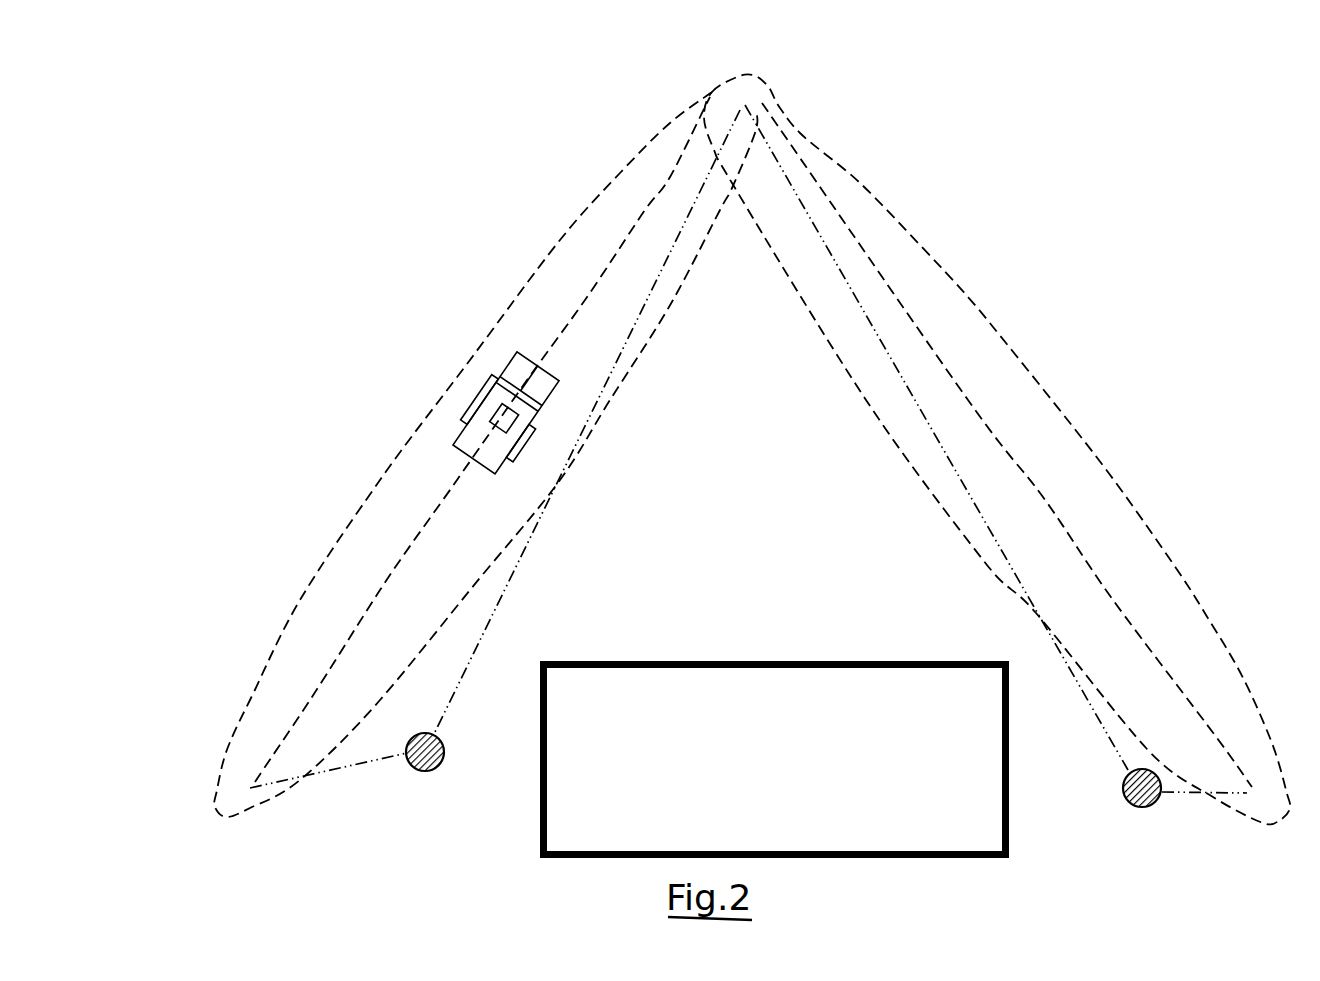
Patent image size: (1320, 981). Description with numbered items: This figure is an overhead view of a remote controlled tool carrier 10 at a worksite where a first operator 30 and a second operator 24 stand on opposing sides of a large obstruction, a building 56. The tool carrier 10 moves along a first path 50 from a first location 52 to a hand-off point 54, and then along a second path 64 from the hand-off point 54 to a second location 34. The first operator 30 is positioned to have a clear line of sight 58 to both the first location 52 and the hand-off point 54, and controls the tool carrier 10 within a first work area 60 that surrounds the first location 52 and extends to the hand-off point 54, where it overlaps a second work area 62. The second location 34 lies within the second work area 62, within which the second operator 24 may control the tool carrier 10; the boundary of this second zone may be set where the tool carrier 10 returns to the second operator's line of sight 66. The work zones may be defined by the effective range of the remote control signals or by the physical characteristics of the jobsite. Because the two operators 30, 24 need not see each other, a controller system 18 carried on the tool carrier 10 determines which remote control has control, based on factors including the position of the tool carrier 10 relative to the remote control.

The tool carrier 10 is at (467, 403).
The controller system 18 is at (515, 427).
The second operator 24 is at (1135, 807).
The first operator 30 is at (423, 773).
The second location 34 is at (1268, 806).
The first path 50 is at (437, 510).
The first location 52 is at (225, 785).
The hand-off point 54 is at (728, 88).
The building 56 is at (755, 662).
The line of sight 58 is at (634, 322).
The first work area 60 is at (560, 240).
The second work area 62 is at (967, 294).
The second path 64 is at (1043, 495).
The line of sight 66 is at (945, 455).